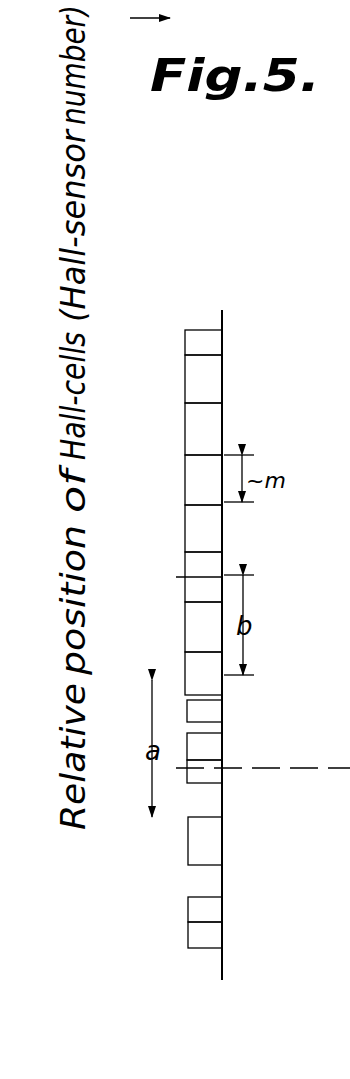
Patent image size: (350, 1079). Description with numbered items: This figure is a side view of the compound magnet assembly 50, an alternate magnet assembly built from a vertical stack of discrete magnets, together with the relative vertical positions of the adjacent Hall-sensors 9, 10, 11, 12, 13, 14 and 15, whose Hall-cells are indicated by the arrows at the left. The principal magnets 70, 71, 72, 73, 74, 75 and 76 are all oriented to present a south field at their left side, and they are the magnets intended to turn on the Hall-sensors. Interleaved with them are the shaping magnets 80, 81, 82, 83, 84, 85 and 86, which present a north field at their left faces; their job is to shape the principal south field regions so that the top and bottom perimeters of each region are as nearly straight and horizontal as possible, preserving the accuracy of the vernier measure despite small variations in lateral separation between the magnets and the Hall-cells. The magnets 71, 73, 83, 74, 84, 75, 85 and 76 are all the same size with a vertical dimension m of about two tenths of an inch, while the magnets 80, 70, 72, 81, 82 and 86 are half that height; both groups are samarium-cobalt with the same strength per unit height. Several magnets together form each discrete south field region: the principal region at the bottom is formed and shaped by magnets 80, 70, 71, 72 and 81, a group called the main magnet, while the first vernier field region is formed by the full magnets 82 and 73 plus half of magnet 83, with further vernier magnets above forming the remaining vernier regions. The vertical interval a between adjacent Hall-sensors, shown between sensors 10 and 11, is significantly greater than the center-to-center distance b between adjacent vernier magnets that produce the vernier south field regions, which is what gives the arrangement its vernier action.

The magnet assembly 50 is at (210, 328).
The discrete magnet 86 is at (223, 336).
The discrete magnet 76 is at (214, 360).
The discrete magnet 85 is at (214, 386).
The discrete magnet 75 is at (218, 454).
The discrete magnet 84 is at (222, 507).
The discrete magnet 74 is at (212, 558).
The discrete magnet 83 is at (212, 608).
The discrete magnet 73 is at (217, 693).
The discrete magnet 82 is at (223, 714).
The discrete magnet 81 is at (223, 738).
The discrete magnet 72 is at (223, 776).
The discrete magnet 71 is at (223, 823).
The discrete magnet 70 is at (223, 899).
The discrete magnet 80 is at (223, 946).
The Hall-sensor 15 is at (172, 152).
The Hall-sensor 14 is at (174, 285).
The Hall-sensor 13 is at (176, 420).
The Hall-sensor 12 is at (176, 553).
The Hall-sensor 11 is at (178, 680).
The Hall-sensor 10 is at (179, 817).
The Hall-sensor 9 is at (179, 952).